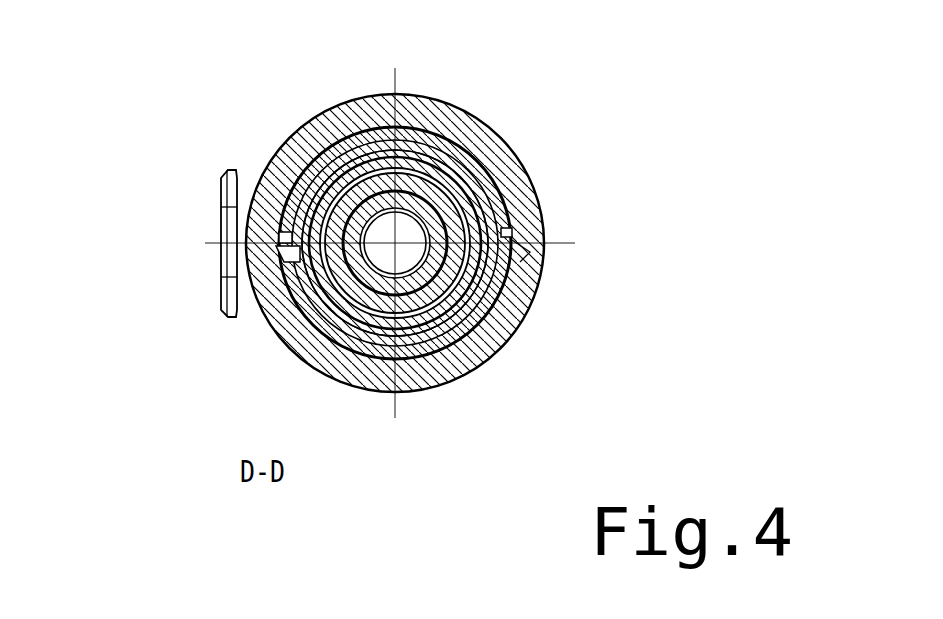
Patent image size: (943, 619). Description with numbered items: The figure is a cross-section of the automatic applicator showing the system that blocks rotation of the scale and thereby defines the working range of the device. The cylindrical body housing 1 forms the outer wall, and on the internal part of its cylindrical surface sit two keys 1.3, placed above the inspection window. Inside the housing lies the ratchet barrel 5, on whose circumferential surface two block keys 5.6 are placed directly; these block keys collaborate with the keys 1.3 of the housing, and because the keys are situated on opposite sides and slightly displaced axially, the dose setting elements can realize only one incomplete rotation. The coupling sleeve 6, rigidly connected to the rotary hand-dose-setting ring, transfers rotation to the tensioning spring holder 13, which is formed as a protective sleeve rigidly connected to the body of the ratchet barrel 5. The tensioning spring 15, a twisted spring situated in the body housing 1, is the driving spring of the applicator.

The body housing 1 is at (453, 210).
The keys 1.3 is at (389, 254).
The ratchet barrel 5 is at (375, 182).
The block keys 5.6 is at (387, 249).
The coupling sleeve 6 is at (413, 270).
The tensioning spring holder 13 is at (162, 190).
The tensioning spring 15 is at (481, 247).